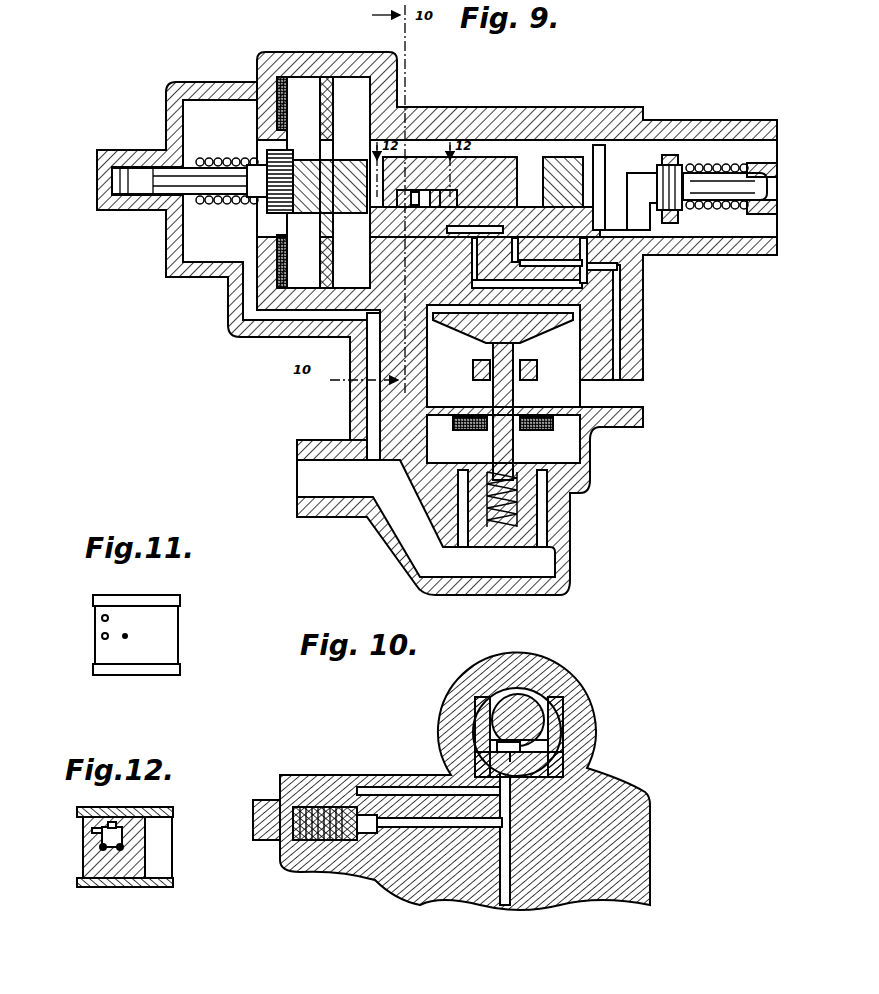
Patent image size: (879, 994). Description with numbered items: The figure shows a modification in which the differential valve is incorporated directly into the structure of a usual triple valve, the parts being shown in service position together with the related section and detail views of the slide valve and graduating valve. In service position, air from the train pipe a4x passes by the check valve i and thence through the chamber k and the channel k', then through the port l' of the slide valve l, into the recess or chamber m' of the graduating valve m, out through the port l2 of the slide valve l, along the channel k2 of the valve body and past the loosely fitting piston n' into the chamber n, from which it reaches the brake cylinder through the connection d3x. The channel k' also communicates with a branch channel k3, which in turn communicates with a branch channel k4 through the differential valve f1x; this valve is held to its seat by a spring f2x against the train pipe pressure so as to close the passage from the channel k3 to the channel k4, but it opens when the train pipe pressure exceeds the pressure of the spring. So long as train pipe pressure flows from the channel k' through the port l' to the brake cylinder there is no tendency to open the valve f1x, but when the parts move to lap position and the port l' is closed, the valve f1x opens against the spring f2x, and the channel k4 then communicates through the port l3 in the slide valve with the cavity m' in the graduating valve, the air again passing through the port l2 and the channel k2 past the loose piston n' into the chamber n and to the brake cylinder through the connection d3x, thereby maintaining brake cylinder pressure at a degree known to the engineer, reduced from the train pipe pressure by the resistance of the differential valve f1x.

In FIG. 9, the channel of the valve body k2 is at (270, 330).
In FIG. 9, the brake cylinder connection d3x is at (517, 323).
In FIG. 9, the train pipe a4x is at (261, 478).
In FIG. 9, the branch channel k3 is at (400, 272).
In FIG. 10, the branch channel k3 is at (445, 822).
In FIG. 9, the chamber n is at (594, 390).
In FIG. 9, the loosely fitting piston n' is at (583, 321).
In FIG. 9, the slide valve l is at (450, 136).
In FIG. 10, the slide valve l is at (570, 737).
In FIG. 11, the slide valve l is at (150, 635).
In FIG. 12, the slide valve l is at (140, 847).
In FIG. 9, the port of the slide valve l' is at (417, 122).
In FIG. 10, the port of the slide valve l' is at (592, 764).
In FIG. 11, the port of the slide valve l' is at (77, 648).
In FIG. 12, the port of the slide valve l' is at (89, 885).
In FIG. 9, the port of the slide valve l2 is at (438, 197).
In FIG. 11, the port of the slide valve l2 is at (126, 637).
In FIG. 12, the port of the slide valve l2 is at (120, 851).
In FIG. 10, the port in the slide valve l3 is at (470, 735).
In FIG. 11, the port in the slide valve l3 is at (101, 618).
In FIG. 12, the port in the slide valve l3 is at (92, 831).
In FIG. 9, the graduating valve m is at (490, 135).
In FIG. 10, the graduating valve m is at (575, 716).
In FIG. 12, the graduating valve m is at (157, 810).
In FIG. 9, the recess or chamber of the graduating valve m' is at (437, 135).
In FIG. 10, the recess or chamber of the graduating valve m' is at (548, 687).
In FIG. 12, the recess or chamber of the graduating valve m' is at (126, 796).
In FIG. 9, the channel k' is at (502, 396).
In FIG. 10, the channel k' is at (498, 852).
In FIG. 9, the chamber k is at (493, 435).
In FIG. 9, the check valve i is at (560, 497).
In FIG. 10, the branch channel k4 is at (410, 790).
In FIG. 10, the differential valve f1x is at (322, 855).
In FIG. 10, the spring f2x is at (282, 862).